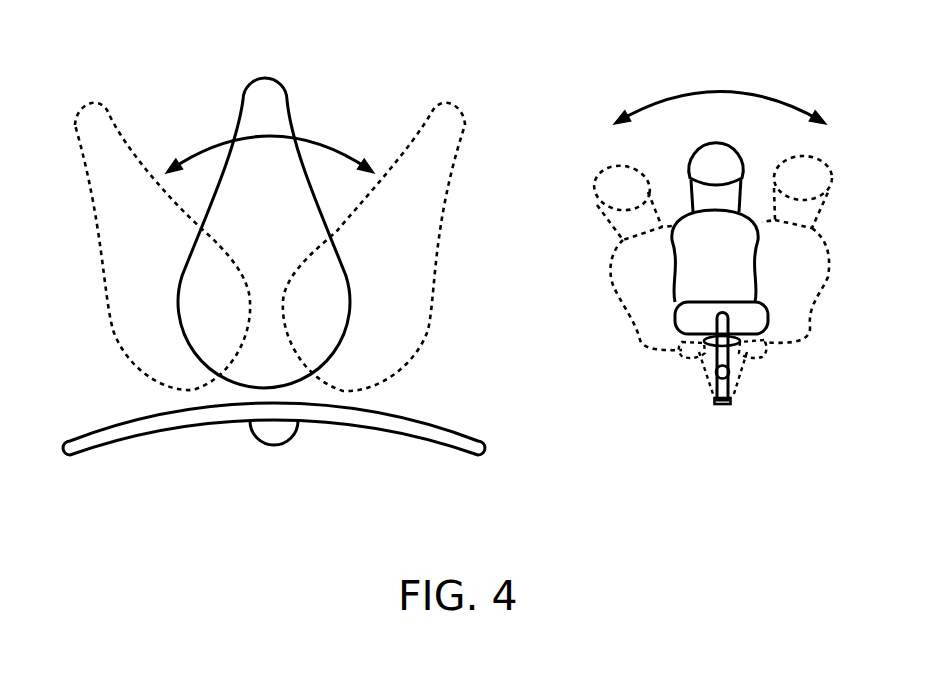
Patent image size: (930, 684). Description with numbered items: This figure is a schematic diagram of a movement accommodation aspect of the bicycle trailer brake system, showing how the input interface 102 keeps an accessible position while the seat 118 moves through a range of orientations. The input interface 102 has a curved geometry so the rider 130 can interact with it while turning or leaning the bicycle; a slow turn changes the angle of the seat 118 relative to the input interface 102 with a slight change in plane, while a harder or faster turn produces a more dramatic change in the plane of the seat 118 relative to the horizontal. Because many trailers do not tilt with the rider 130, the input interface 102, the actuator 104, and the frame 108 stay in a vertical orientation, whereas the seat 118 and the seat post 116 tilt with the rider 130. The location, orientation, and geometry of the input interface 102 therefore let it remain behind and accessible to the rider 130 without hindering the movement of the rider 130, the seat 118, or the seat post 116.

The input interface 102 is at (110, 425).
The actuator 104 is at (274, 448).
The frame 108 is at (731, 376).
The seat post 116 is at (714, 394).
The seat 118 is at (246, 84).
The rider 130 is at (690, 160).